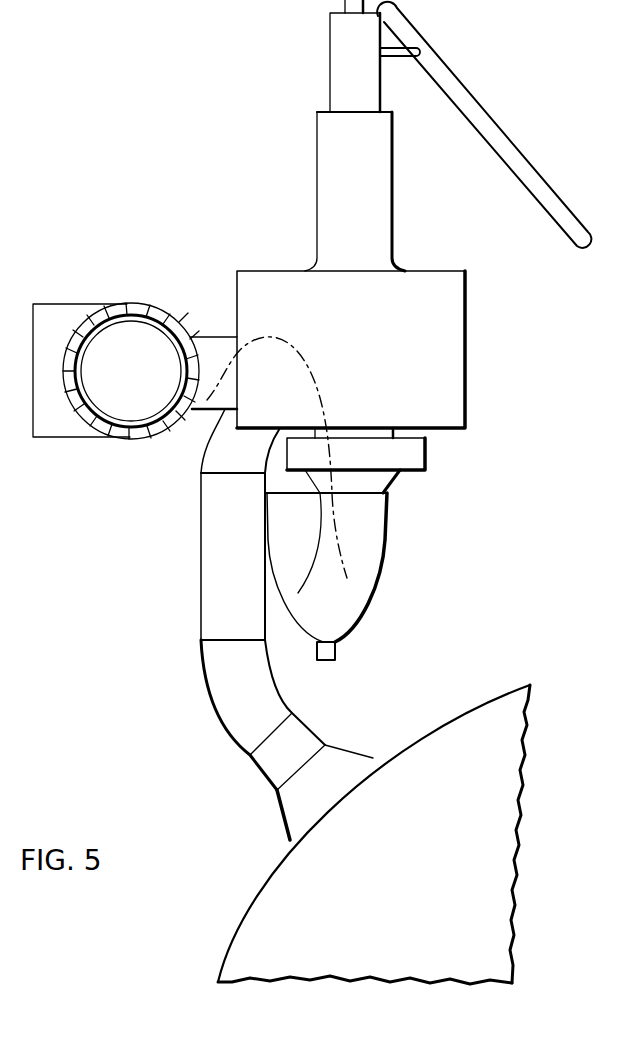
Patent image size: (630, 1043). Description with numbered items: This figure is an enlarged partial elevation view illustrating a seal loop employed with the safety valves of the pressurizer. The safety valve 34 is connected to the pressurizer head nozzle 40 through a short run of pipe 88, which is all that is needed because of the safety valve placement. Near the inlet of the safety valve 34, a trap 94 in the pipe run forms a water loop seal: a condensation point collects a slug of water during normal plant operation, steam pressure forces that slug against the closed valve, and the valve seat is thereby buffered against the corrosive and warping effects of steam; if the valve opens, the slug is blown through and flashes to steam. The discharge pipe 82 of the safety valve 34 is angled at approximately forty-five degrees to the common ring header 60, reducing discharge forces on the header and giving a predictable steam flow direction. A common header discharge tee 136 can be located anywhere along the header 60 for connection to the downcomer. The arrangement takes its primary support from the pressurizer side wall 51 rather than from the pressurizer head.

The safety valve 34 is at (465, 303).
The discharge pipe 82 is at (215, 347).
The common header discharge tee 136 is at (67, 318).
The common ring header 60 is at (152, 305).
The short run of pipe 88 is at (217, 428).
The trap 94 is at (381, 568).
The pressurizer head nozzle 40 is at (335, 758).
The pressurizer side wall 51 is at (497, 708).